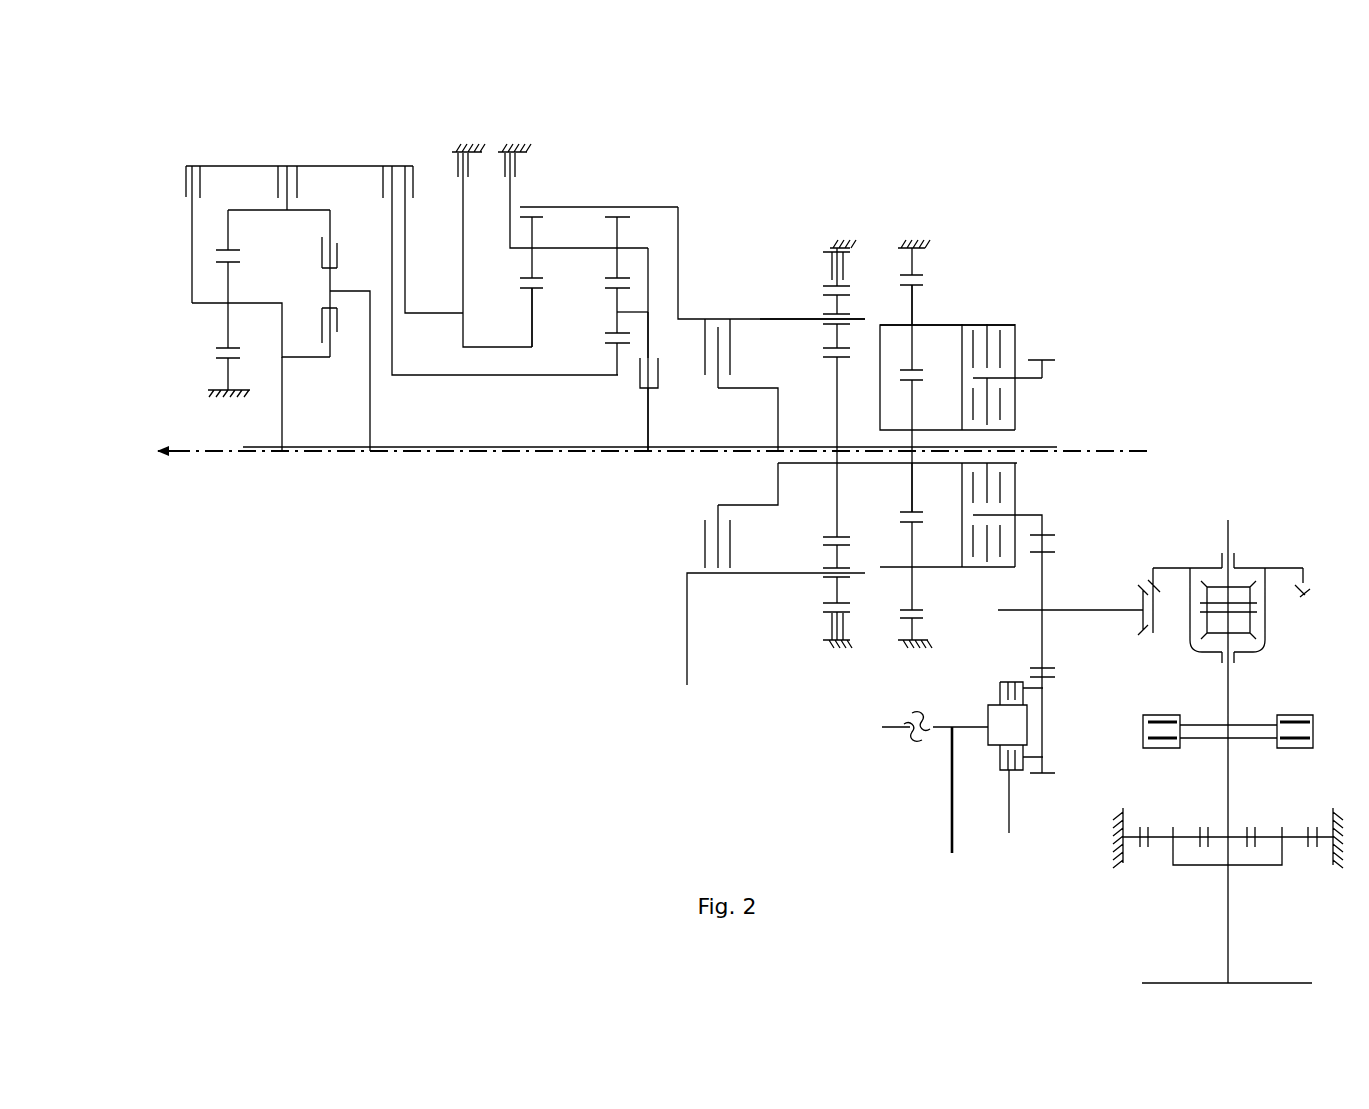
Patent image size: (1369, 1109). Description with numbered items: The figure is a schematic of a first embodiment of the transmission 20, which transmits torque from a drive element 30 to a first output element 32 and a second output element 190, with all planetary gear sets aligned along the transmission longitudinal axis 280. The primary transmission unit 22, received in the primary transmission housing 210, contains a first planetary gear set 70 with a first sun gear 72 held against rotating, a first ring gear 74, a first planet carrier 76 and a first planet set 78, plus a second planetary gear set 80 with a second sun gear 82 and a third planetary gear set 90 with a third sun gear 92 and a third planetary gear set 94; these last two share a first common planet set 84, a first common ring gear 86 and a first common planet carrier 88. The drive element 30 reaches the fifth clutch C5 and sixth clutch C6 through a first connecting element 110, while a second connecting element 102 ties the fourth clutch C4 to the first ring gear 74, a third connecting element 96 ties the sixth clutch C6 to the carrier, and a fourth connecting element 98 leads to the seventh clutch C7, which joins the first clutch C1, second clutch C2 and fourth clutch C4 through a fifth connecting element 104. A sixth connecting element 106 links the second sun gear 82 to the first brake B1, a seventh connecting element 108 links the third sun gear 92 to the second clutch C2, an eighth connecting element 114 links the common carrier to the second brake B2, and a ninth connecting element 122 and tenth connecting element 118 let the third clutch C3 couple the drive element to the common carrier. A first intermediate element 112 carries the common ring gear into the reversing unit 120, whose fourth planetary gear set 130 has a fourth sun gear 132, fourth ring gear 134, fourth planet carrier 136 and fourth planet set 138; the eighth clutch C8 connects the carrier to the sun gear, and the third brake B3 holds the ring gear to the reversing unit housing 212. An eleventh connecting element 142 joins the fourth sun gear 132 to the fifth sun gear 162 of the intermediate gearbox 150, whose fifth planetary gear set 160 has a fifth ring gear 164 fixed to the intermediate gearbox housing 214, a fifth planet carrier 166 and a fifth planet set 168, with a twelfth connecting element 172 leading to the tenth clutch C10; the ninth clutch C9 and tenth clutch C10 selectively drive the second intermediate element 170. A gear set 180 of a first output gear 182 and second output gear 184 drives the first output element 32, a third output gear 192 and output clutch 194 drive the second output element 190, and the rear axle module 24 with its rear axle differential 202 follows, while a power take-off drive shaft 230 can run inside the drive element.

The transmission 20 is at (300, 787).
The primary transmission unit 22 is at (377, 611).
The rear axle module 24 is at (1232, 472).
The drive element 30 is at (243, 447).
The first output element 32 is at (1123, 608).
The first planetary gear set 70 is at (230, 588).
The first sun gear 72 is at (228, 368).
The first ring gear 74 is at (228, 240).
The first planet carrier 76 is at (207, 302).
The first planet set 78 is at (228, 323).
The second planetary gear set 80 is at (538, 580).
The second sun gear 82 is at (532, 327).
The first common planet set 84 is at (617, 242).
The first common ring gear 86 is at (622, 207).
The first common planet carrier 88 is at (652, 273).
The third planetary gear set 90 is at (630, 580).
The third sun gear 92 is at (617, 355).
The third planetary gear set 94 is at (618, 322).
The third connecting element 96 is at (285, 370).
The fourth connecting element 98 is at (192, 218).
The second connecting element 102 is at (310, 208).
The fifth connecting element 104 is at (243, 163).
The sixth connecting element 106 is at (460, 300).
The seventh connecting element 108 is at (402, 377).
The first connecting element 110 is at (370, 360).
The first intermediate element 112 is at (682, 223).
The eighth connecting element 114 is at (512, 202).
The tenth connecting element 118 is at (653, 328).
The reversing unit 120 is at (700, 695).
The ninth connecting element 122 is at (650, 415).
The fourth planetary gear set 130 is at (838, 718).
The fourth sun gear 132 is at (832, 397).
The fourth ring gear 134 is at (847, 285).
The fourth planet carrier 136 is at (798, 319).
The fourth planet set 138 is at (837, 583).
The eleventh connecting element 142 is at (740, 388).
The intermediate gearbox 150 is at (1010, 152).
The fifth planetary gear set 160 is at (912, 688).
The fifth sun gear 162 is at (912, 490).
The fifth ring gear 164 is at (912, 267).
The fifth planet carrier 166 is at (950, 323).
The fifth planet set 168 is at (912, 312).
The second intermediate element 170 is at (1017, 515).
The twelfth connecting element 172 is at (950, 323).
The gear set 180 is at (1042, 532).
The first output gear 182 is at (1042, 532).
The second output gear 184 is at (1042, 588).
The second output element 190 is at (947, 807).
The third output gear 192 is at (1043, 733).
The output clutch 194 is at (1005, 817).
The rear axle differential 202 is at (1262, 547).
The primary transmission housing 210 is at (212, 393).
The reversing unit housing 212 is at (839, 243).
The intermediate gearbox housing 214 is at (913, 240).
The power take-off drive shaft 230 is at (1033, 447).
The transmission longitudinal axis 280 is at (1098, 452).
The first clutch C1 is at (407, 162).
The second clutch C2 is at (388, 160).
The third clutch C3 is at (638, 380).
The fourth clutch C4 is at (291, 163).
The fifth clutch C5 is at (337, 245).
The sixth clutch C6 is at (337, 332).
The seventh clutch C7 is at (190, 162).
The eighth clutch C8 is at (720, 318).
The ninth clutch C9 is at (1015, 413).
The tenth clutch C10 is at (1002, 323).
The first brake B1 is at (458, 172).
The second brake B2 is at (515, 172).
The third brake B3 is at (830, 628).